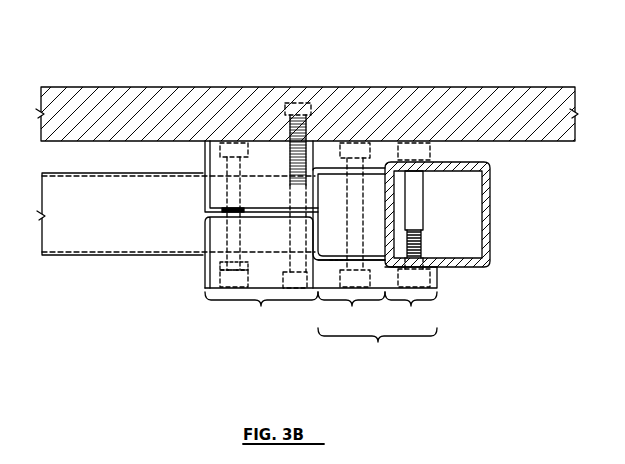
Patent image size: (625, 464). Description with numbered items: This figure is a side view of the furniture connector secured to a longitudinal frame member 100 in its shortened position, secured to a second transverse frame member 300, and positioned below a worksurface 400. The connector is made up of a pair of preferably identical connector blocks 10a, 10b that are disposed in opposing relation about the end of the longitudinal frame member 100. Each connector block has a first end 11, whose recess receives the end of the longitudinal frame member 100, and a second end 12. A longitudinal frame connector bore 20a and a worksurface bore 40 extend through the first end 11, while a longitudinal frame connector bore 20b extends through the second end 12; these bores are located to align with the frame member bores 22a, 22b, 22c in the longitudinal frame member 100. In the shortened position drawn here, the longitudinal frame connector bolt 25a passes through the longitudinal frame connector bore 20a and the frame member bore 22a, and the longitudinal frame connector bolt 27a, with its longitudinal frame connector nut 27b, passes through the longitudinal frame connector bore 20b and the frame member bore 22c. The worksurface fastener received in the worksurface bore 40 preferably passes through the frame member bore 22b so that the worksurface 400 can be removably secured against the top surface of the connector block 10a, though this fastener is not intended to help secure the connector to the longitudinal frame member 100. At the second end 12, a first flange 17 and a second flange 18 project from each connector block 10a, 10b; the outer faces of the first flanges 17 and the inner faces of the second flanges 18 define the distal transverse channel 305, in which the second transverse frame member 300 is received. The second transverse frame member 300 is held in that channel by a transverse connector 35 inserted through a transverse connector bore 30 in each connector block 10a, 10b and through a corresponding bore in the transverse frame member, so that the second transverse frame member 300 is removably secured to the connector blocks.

The worksurface 400 is at (503, 100).
The longitudinal frame member 100 is at (112, 219).
The connector block 10a is at (206, 147).
The connector block 10b is at (215, 265).
The second end 12 is at (375, 265).
The transverse connector bore 30 is at (437, 277).
The second transverse frame member 300 is at (470, 210).
The distal transverse channel 305 is at (398, 173).
The transverse connector 35 is at (413, 141).
The longitudinal frame connector bore 20a is at (230, 143).
The longitudinal frame connector bolt 25a is at (243, 143).
The frame member bore 22a is at (225, 262).
The frame member bore 22b is at (283, 255).
The worksurface bore 40 is at (300, 276).
The frame member bore 22c is at (340, 268).
The longitudinal frame connector bore 20b is at (366, 143).
The longitudinal frame connector bolt 27a is at (355, 142).
The longitudinal frame connector nut 27b is at (363, 284).
The first end 11 is at (261, 309).
The first flange 17 is at (351, 309).
The second flange 18 is at (411, 309).